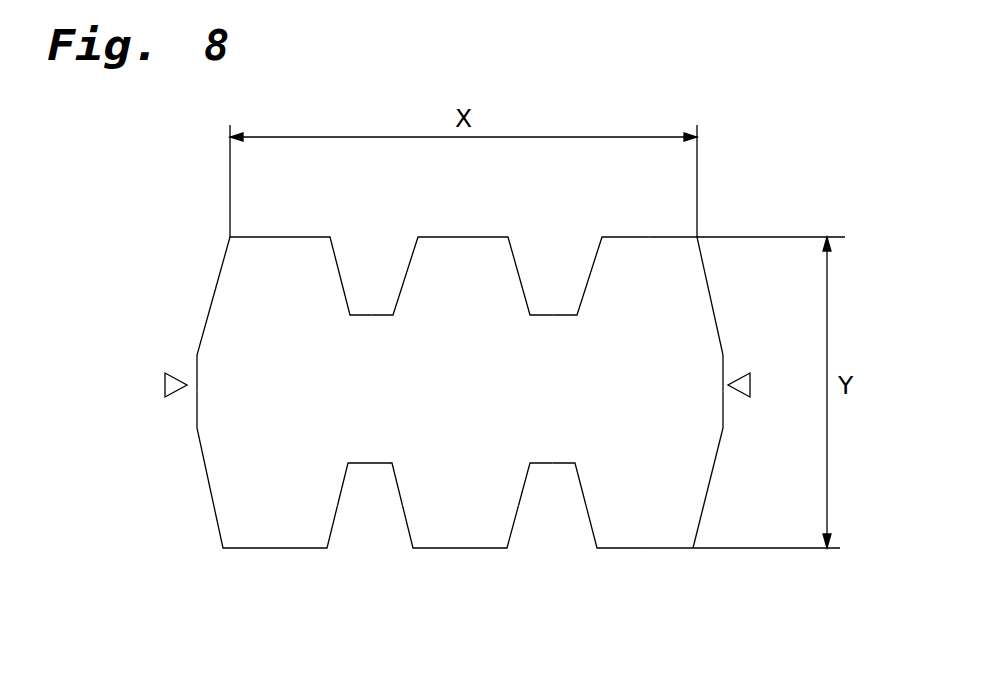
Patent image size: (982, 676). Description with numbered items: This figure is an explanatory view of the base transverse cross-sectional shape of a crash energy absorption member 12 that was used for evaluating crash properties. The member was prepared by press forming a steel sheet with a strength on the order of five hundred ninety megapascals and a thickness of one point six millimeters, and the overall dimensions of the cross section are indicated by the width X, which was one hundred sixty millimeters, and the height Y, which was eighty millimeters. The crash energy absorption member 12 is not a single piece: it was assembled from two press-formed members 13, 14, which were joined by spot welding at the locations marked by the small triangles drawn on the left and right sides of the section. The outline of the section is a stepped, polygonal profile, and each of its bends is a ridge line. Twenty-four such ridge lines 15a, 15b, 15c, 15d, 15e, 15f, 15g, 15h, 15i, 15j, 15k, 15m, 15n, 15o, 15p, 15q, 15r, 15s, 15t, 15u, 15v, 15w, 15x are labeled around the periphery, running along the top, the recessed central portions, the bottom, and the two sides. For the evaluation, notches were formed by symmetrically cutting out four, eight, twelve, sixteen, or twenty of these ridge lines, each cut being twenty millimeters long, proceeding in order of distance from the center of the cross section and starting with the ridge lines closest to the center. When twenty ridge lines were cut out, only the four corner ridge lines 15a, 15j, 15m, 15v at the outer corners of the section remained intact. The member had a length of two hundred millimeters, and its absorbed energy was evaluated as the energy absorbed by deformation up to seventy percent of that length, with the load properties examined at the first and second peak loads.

The crash energy absorption member 12 is at (752, 165).
The press-formed member 13 is at (705, 277).
The press-formed member 14 is at (700, 518).
The ridge line 15a is at (223, 548).
The ridge line 15b is at (327, 548).
The ridge line 15c is at (348, 463).
The ridge line 15d is at (392, 463).
The ridge line 15e is at (413, 548).
The ridge line 15f is at (507, 548).
The ridge line 15g is at (530, 463).
The ridge line 15h is at (575, 463).
The ridge line 15i is at (597, 548).
The ridge line 15j is at (693, 548).
The ridge line 15k is at (723, 428).
The ridge line 15m is at (697, 237).
The ridge line 15n is at (602, 237).
The ridge line 15o is at (577, 315).
The ridge line 15p is at (530, 315).
The ridge line 15q is at (508, 237).
The ridge line 15r is at (418, 237).
The ridge line 15s is at (393, 315).
The ridge line 15t is at (350, 315).
The ridge line 15u is at (330, 237).
The ridge line 15v is at (230, 237).
The ridge line 15w is at (197, 355).
The ridge line 15x is at (197, 428).